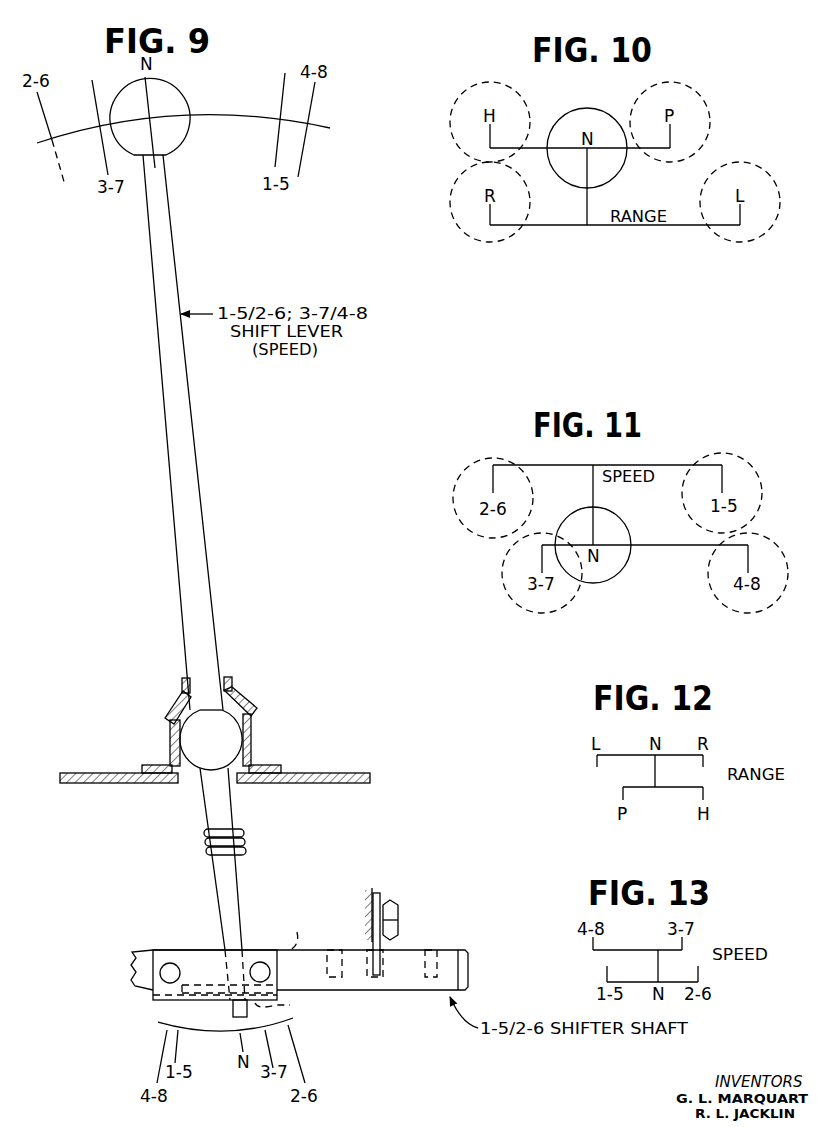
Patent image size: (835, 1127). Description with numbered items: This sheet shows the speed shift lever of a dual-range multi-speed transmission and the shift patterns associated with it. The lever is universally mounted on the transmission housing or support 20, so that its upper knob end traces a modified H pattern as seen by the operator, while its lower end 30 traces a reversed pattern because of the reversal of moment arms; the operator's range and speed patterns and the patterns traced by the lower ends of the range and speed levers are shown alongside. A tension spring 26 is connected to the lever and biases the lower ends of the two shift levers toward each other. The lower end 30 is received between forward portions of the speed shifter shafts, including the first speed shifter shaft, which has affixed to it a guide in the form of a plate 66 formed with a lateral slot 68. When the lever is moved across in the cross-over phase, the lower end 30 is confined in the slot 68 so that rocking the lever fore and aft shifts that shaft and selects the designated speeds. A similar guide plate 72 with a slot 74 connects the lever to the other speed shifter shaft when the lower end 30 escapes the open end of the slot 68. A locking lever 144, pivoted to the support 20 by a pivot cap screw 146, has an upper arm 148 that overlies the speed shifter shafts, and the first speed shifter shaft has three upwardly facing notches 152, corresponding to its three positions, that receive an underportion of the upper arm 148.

The transmission housing 20 is at (350, 773).
The tension spring 26 is at (246, 839).
The lower end of shift lever 30 is at (233, 1008).
The plate 66 is at (153, 1000).
The lateral slot 68 is at (284, 1007).
The guide plate 72 is at (296, 931).
The slot 74 is at (230, 985).
The locking lever 144 is at (381, 896).
The pivot cap screw 146 is at (399, 912).
The upper arm 148 is at (385, 950).
The notches 152 is at (347, 950).